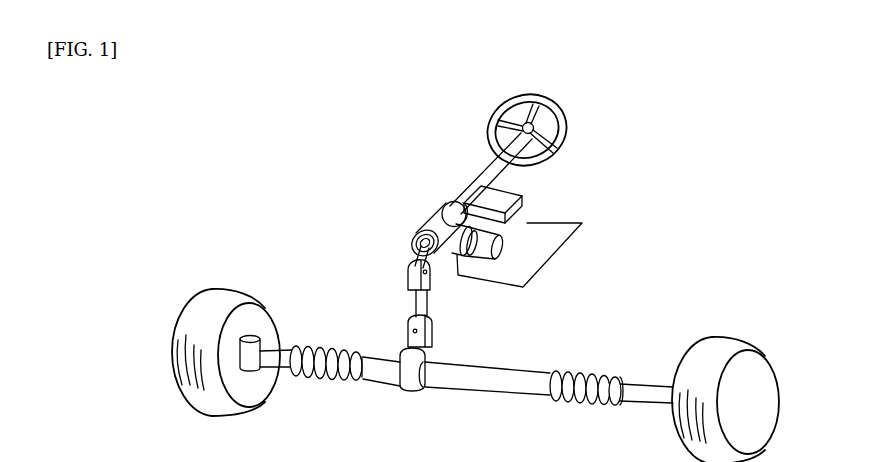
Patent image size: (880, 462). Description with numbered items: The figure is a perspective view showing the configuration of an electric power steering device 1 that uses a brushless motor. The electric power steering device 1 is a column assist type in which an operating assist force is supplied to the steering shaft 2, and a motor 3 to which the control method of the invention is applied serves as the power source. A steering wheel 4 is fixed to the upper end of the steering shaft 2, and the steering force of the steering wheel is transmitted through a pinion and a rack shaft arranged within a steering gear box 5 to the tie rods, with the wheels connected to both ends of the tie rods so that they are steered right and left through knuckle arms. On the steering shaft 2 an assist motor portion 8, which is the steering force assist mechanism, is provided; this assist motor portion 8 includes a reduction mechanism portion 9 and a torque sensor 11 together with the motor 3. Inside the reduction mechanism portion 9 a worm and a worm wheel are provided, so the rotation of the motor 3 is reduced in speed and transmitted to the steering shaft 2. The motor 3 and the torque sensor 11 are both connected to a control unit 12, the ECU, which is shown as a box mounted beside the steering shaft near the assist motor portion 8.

The electric power steering device 1 is at (378, 223).
The steering shaft 2 is at (496, 171).
The motor 3 is at (499, 247).
The steering wheel 4 is at (563, 130).
The steering gear box 5 is at (410, 395).
The assist motor portion 8 is at (425, 217).
The reduction mechanism portion 9 is at (414, 223).
The torque sensor 11 is at (457, 207).
The control unit 12 is at (509, 201).